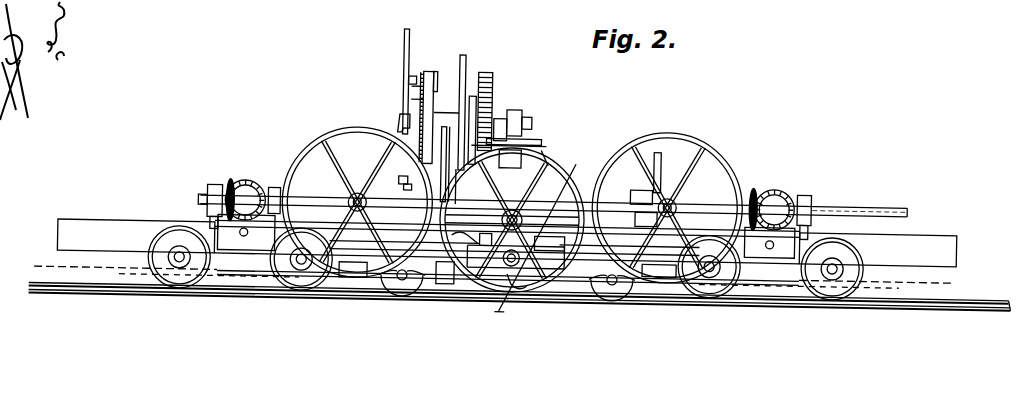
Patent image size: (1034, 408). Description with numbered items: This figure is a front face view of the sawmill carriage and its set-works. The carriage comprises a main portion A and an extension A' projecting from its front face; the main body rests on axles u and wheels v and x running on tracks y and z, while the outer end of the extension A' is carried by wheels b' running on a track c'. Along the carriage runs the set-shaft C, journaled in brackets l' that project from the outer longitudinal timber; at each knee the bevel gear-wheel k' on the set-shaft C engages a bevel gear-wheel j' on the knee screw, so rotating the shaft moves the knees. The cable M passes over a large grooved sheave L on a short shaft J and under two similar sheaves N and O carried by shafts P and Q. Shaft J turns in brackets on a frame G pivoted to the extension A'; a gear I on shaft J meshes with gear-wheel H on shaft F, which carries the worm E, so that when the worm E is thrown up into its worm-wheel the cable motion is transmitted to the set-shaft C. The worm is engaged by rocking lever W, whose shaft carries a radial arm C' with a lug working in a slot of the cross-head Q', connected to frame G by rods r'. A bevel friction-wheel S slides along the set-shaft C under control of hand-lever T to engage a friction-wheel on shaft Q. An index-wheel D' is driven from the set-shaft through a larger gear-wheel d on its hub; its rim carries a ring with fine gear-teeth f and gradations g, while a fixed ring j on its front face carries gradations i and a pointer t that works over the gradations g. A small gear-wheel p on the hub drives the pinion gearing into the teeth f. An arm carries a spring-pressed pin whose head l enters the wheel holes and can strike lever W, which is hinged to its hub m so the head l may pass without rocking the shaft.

The main portion of the carriage A is at (506, 243).
The extension of the carriage A' is at (436, 269).
The set-shaft C is at (553, 200).
The radial arm C' is at (514, 113).
The index-wheel D' is at (439, 117).
The worm E is at (421, 101).
The worm shaft F is at (501, 319).
The pivoted frame G is at (491, 258).
The gear-wheel H is at (516, 266).
The gear I is at (400, 135).
The short shaft J is at (556, 168).
The grooved sheave L is at (537, 224).
The cable M is at (60, 275).
The sheave N is at (357, 195).
The sheave O is at (667, 207).
The shaft P is at (357, 196).
The shaft Q is at (684, 197).
The cross-head Q' is at (537, 117).
The bevel friction-wheel S is at (660, 165).
The hand-lever T is at (512, 209).
The lever W is at (414, 81).
The wheels b' is at (506, 300).
The track c' is at (509, 293).
The gear-wheel d is at (489, 105).
The gear-teeth f is at (433, 72).
The gradations g is at (409, 88).
The gradations i is at (451, 186).
The indicator-ring j is at (408, 187).
The bevel gear-wheel j' is at (510, 193).
The bevel gear-wheel k' is at (492, 194).
The pin head l is at (398, 177).
The brackets l' is at (511, 203).
The hub m is at (398, 122).
The small gear-wheel p is at (470, 120).
The rods r' is at (506, 237).
The pointer t is at (412, 70).
The axles u is at (175, 263).
The wheels v is at (506, 262).
The wheels x is at (494, 118).
The track y is at (97, 300).
The track z is at (508, 158).